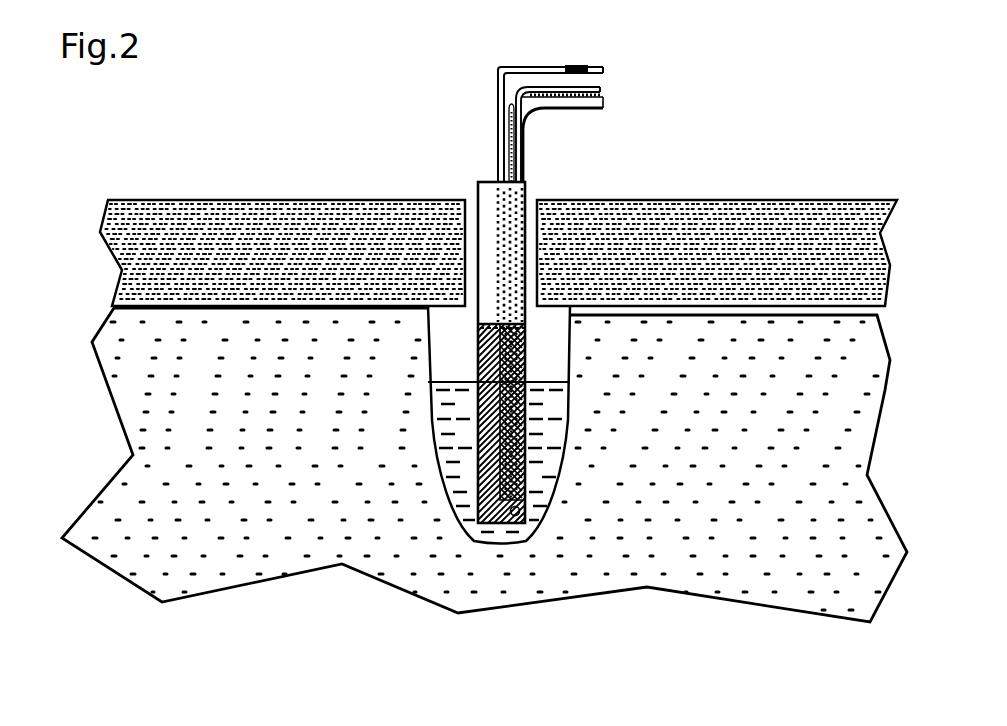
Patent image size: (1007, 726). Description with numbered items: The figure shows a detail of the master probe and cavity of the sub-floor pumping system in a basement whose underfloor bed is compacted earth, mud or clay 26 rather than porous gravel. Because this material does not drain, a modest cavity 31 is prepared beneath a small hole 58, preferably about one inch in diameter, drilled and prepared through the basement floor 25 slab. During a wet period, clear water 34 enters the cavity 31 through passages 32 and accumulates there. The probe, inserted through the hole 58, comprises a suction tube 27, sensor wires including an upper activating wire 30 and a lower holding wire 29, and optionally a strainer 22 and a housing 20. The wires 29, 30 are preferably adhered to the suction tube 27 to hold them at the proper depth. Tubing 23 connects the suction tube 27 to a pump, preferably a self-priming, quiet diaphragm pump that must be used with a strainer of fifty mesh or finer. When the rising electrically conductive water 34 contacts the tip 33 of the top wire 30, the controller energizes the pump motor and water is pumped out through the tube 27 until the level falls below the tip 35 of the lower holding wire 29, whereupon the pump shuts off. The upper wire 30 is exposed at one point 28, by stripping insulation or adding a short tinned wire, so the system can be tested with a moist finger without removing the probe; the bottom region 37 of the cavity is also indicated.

The housing 20 is at (478, 190).
The strainer 22 is at (477, 359).
The tubing 23 is at (603, 111).
The basement floor 25 is at (268, 216).
The mud or clay underfloor bed 26 is at (97, 337).
The suction tube 27 is at (527, 140).
The exposed point of upper sensor wire 28 is at (577, 66).
The lower holding wire 29 is at (603, 88).
The upper activating wire 30 is at (499, 122).
The cavity 31 is at (560, 341).
The passages 32 is at (853, 307).
The tip of top wire 33 is at (477, 345).
The water 34 is at (458, 380).
The tip of lower holding wire 35 is at (477, 440).
The hole bottom 37 is at (478, 523).
The hole 58 is at (528, 213).